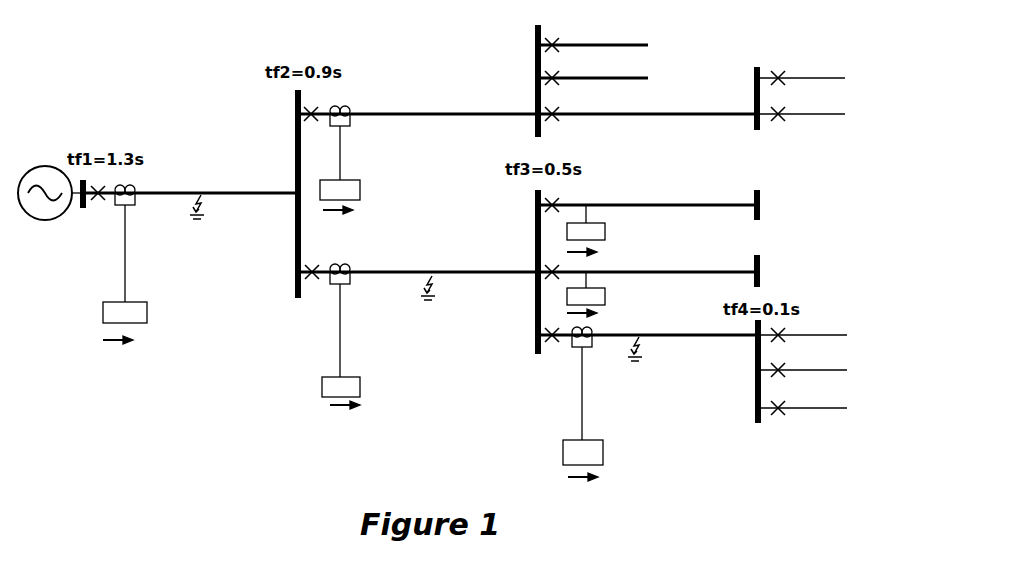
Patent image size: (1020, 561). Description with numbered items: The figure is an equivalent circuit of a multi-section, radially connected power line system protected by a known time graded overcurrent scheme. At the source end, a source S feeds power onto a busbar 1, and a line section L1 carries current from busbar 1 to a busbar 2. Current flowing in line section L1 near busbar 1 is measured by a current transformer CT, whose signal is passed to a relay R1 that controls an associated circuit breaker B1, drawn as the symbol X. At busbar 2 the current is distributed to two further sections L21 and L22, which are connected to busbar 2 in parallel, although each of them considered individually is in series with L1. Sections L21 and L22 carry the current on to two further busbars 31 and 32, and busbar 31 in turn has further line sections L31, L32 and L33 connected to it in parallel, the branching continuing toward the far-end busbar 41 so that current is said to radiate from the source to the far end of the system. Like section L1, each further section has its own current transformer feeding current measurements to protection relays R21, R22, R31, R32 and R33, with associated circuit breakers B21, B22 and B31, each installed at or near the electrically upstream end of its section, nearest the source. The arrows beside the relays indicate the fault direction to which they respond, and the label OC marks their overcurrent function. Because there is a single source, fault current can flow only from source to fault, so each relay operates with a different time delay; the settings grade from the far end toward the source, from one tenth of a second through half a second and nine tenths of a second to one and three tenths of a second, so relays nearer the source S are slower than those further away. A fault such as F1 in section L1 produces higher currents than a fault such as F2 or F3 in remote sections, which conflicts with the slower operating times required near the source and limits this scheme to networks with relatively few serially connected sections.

The busbar 1 is at (83, 217).
The busbar 2 is at (291, 213).
The busbar 31 is at (516, 281).
The busbar 32 is at (574, 78).
The bus 41 is at (791, 389).
The source S is at (50, 177).
The current transformer CT is at (134, 189).
The circuit breaker B1 is at (99, 205).
The circuit breaker B21 is at (317, 283).
The circuit breaker B22 is at (317, 126).
The circuit breaker B31 is at (560, 358).
The relay R1 is at (125, 288).
The protection relay R21 is at (340, 348).
The protection relay R22 is at (340, 173).
The relay R31 is at (583, 418).
The relay R32 is at (586, 294).
The relay R33 is at (586, 230).
The line section L1 is at (190, 183).
The line section L21 is at (527, 257).
The line section L22 is at (527, 103).
The line section L31 is at (647, 325).
The line section L32 is at (651, 266).
The line section L33 is at (647, 203).
The fault F1 is at (196, 220).
The fault F2 is at (423, 297).
The fault F3 is at (637, 360).